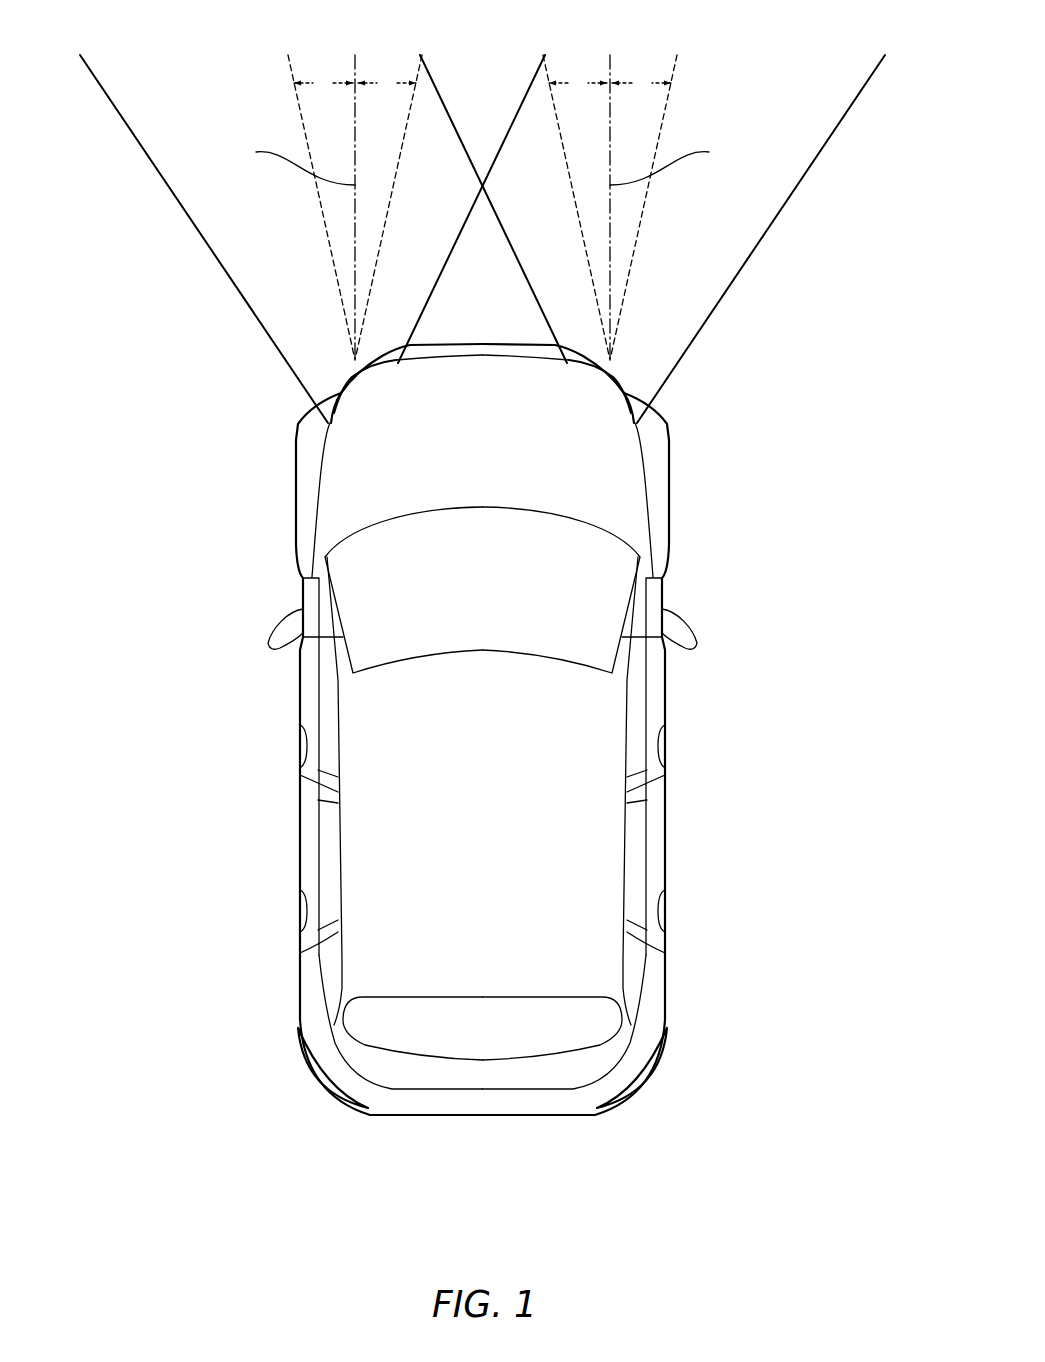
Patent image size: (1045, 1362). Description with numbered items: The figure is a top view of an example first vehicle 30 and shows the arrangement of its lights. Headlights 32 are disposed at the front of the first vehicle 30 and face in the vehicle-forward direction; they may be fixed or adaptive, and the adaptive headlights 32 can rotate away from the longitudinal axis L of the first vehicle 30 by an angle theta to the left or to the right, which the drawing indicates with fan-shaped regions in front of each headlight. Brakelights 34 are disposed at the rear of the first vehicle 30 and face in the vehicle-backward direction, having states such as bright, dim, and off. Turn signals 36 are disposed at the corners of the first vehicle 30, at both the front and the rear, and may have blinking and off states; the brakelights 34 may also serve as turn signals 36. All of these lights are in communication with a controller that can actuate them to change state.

The first vehicle 30 is at (198, 474).
The headlights 32 is at (343, 377).
The brakelights 34 is at (313, 1077).
The turn signals 36 is at (333, 395).